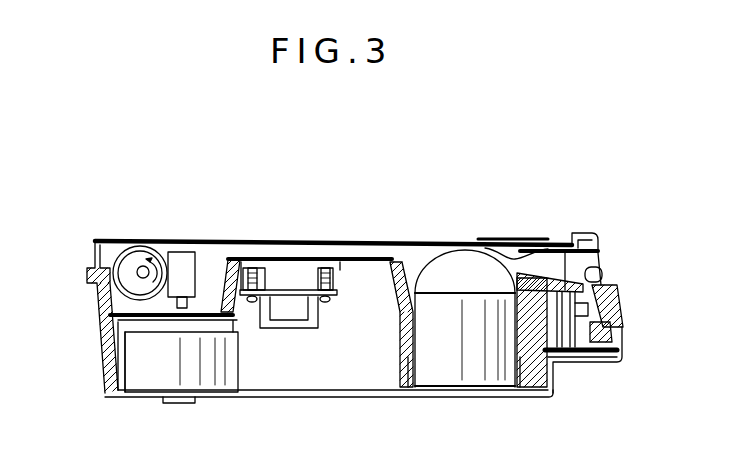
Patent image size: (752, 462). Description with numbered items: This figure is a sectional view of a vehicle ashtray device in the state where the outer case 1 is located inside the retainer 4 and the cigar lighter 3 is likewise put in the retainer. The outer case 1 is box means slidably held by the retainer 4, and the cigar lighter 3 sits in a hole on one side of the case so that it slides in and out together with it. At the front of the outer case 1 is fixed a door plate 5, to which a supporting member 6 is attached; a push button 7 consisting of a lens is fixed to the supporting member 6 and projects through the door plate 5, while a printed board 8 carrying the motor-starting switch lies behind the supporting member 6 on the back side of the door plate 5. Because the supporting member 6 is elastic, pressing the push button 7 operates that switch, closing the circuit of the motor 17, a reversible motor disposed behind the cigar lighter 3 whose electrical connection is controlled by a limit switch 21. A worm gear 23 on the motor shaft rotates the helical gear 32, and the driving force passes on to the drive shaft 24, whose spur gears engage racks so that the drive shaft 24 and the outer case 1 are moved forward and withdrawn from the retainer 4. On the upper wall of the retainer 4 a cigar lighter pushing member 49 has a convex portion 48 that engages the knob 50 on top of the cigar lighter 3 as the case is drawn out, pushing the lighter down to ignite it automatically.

The outer case 1 is at (345, 398).
The cigar lighter 3 is at (479, 398).
The retainer 4 is at (420, 239).
The door plate 5 is at (614, 278).
The supporting member 6 is at (612, 336).
The push button 7 is at (622, 290).
The printed board 8 is at (560, 239).
The motor 17 is at (132, 398).
The limit switch 21 is at (300, 238).
The worm gear 23 is at (197, 258).
The drive shaft 24 is at (132, 270).
The helical gear 32 is at (122, 238).
The convex portion 48 is at (490, 236).
The cigar lighter pushing member 49 is at (507, 235).
The knob 50 is at (393, 242).